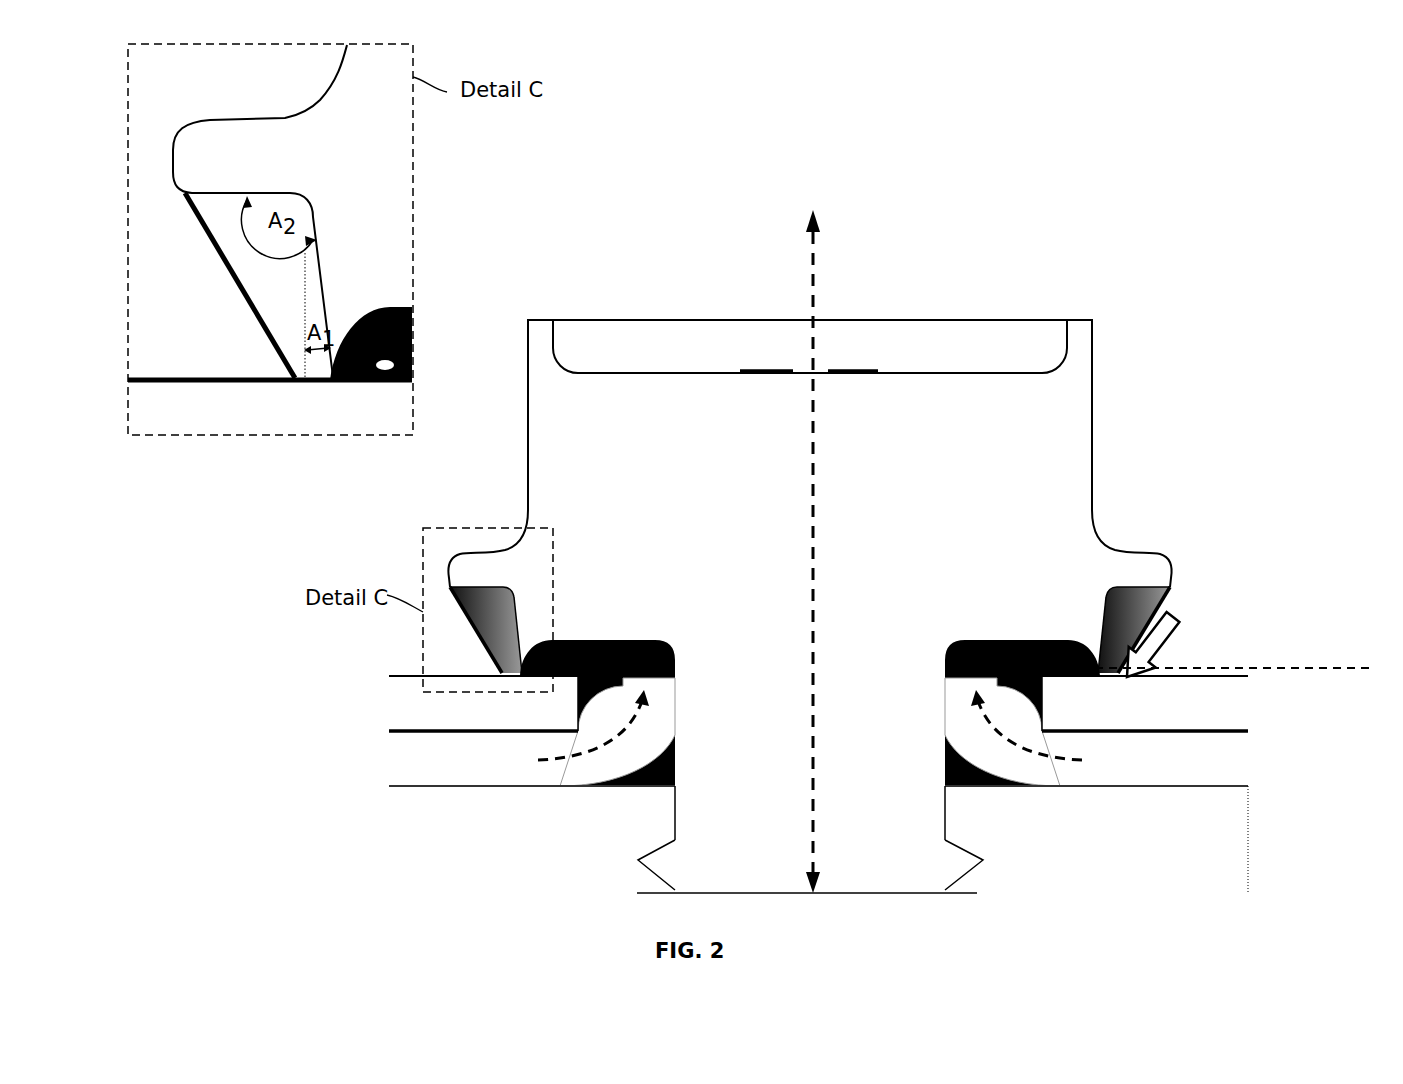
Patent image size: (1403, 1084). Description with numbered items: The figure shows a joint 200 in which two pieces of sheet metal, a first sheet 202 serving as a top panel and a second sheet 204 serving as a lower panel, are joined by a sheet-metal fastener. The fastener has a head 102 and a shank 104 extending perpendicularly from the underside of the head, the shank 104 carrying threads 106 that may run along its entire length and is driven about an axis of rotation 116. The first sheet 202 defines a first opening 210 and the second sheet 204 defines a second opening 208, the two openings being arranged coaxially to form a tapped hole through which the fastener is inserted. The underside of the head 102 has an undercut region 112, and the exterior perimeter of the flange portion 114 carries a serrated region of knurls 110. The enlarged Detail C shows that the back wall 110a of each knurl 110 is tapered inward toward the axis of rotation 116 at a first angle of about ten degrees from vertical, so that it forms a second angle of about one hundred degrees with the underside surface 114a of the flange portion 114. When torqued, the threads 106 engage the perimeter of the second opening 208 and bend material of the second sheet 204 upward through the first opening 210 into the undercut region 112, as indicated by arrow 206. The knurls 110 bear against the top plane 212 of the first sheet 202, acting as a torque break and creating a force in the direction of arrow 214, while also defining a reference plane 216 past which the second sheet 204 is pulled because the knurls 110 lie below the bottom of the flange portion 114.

The head 102 is at (1093, 343).
The shank 104 is at (947, 813).
The threads 106 is at (982, 860).
The knurl 110 is at (235, 270).
The back wall 110a is at (320, 273).
The undercut region 112 is at (618, 636).
The flange portion 114 is at (1137, 552).
The underside surface 114a is at (208, 197).
The axis of rotation 116 is at (818, 307).
The joint 200 is at (1278, 318).
The first sheet 202 is at (390, 705).
The second sheet 204 is at (390, 763).
The arrow 206 is at (527, 762).
The second opening 208 is at (643, 790).
The first opening 210 is at (578, 693).
The top plane 212 is at (418, 675).
The arrow 214 is at (1172, 608).
The reference plane 216 is at (1328, 665).